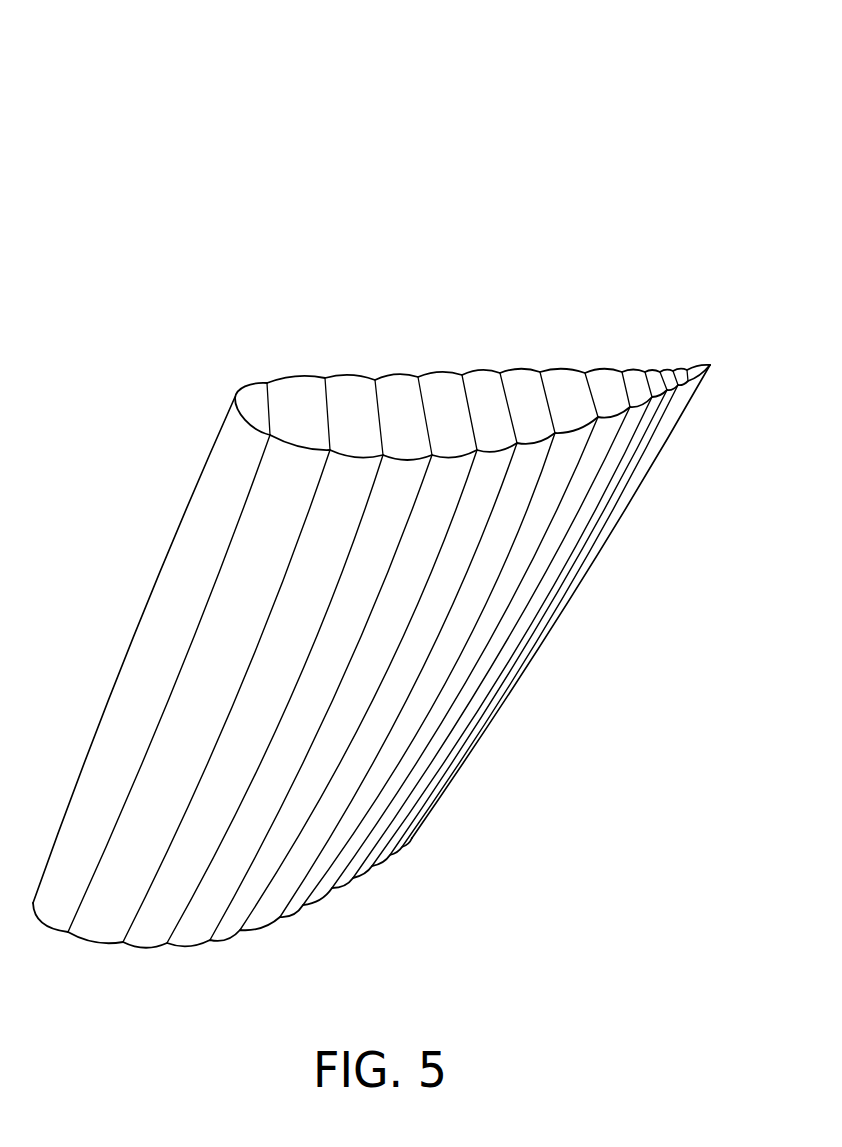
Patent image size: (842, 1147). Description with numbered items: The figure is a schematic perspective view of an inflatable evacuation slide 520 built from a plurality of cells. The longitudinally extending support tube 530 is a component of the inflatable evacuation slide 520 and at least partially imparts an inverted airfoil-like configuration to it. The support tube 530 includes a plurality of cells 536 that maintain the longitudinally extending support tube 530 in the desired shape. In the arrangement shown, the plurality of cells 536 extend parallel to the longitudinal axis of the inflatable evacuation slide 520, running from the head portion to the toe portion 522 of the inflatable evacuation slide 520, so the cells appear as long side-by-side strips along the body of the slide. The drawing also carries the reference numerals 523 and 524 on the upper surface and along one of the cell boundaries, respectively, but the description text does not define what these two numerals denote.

The inflatable evacuation slide 520 is at (133, 102).
The toe portion 522 is at (209, 961).
The top layer 523 is at (475, 376).
The layer side edge 524 is at (458, 455).
The longitudinally extending support tube 530 is at (565, 396).
The plurality of cells 536 is at (437, 397).